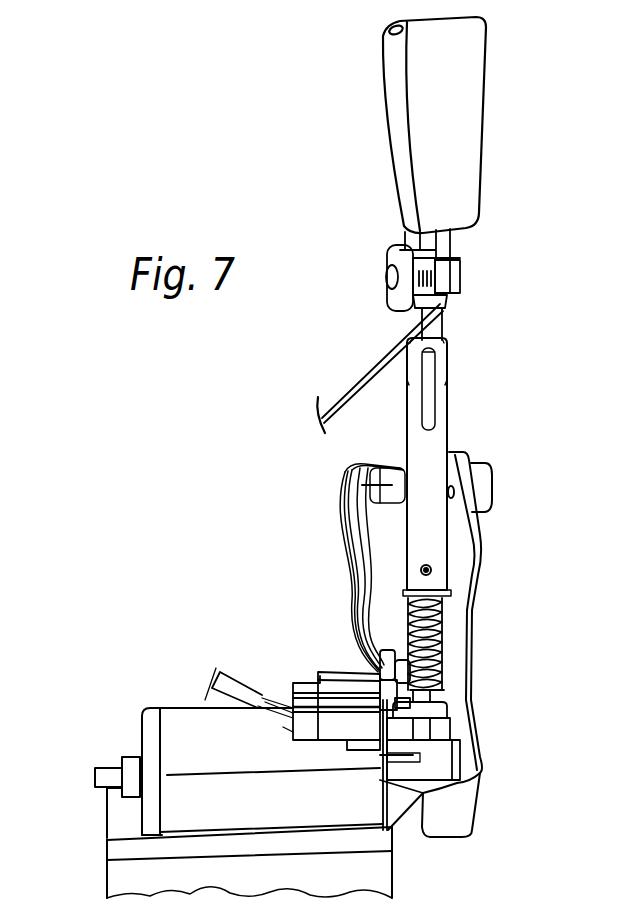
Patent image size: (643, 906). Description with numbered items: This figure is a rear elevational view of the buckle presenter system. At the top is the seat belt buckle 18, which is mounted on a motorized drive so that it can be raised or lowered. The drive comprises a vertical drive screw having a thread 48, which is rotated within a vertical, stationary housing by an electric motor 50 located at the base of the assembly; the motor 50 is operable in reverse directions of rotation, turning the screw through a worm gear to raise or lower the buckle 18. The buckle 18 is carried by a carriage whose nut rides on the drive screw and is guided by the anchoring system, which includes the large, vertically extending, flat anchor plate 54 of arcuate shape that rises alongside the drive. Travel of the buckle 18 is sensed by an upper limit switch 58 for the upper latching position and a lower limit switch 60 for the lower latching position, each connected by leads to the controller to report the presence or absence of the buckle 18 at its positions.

The seat belt buckle 18 is at (458, 108).
The thread 48 is at (450, 634).
The electric motor 50 is at (198, 727).
The anchor plate 54 is at (463, 557).
The upper limit switch 58 is at (358, 488).
The lower limit switch 60 is at (388, 626).